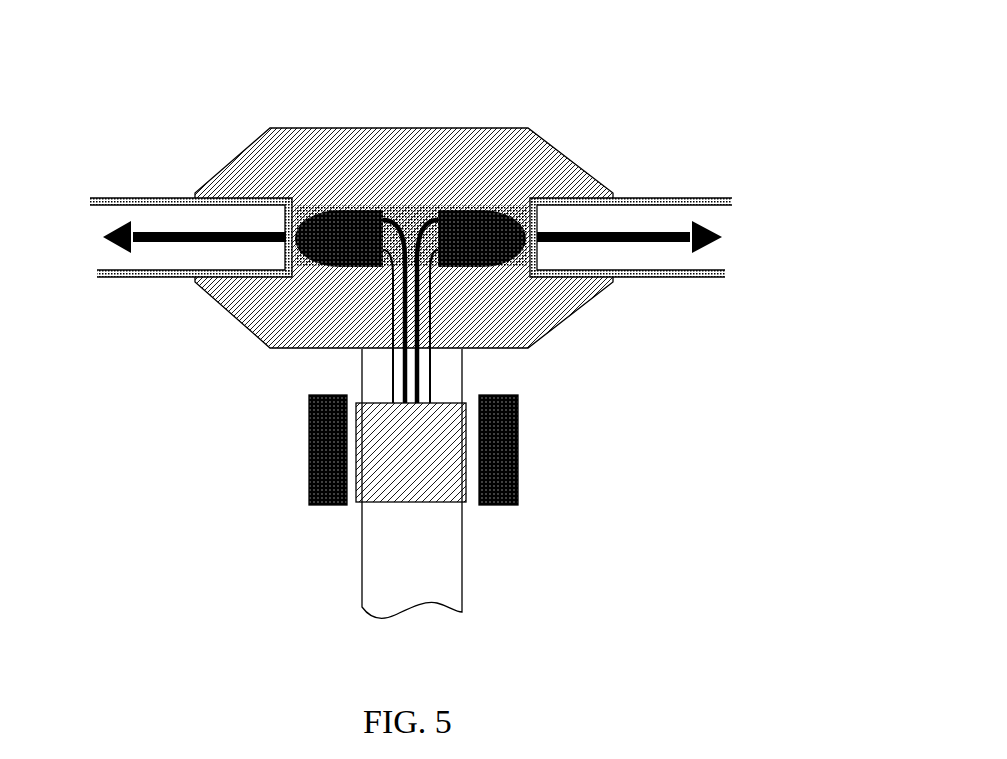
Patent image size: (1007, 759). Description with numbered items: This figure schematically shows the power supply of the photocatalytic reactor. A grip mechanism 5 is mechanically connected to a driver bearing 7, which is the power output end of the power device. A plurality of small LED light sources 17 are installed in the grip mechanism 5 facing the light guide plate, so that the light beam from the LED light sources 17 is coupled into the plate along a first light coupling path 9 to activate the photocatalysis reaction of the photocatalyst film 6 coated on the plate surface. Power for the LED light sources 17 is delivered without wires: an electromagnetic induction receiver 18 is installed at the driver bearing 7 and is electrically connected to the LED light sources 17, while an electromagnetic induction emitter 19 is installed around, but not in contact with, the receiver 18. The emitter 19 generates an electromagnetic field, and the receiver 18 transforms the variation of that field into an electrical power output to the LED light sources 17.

The grip mechanism 5 is at (572, 142).
The photocatalyst film 6 is at (730, 197).
The driver bearing 7 is at (462, 522).
The first light coupling path 9 is at (200, 232).
The LED light source 17 is at (318, 196).
The electromagnetic induction receiver 18 is at (382, 509).
The electromagnetic induction emitter 19 is at (292, 428).